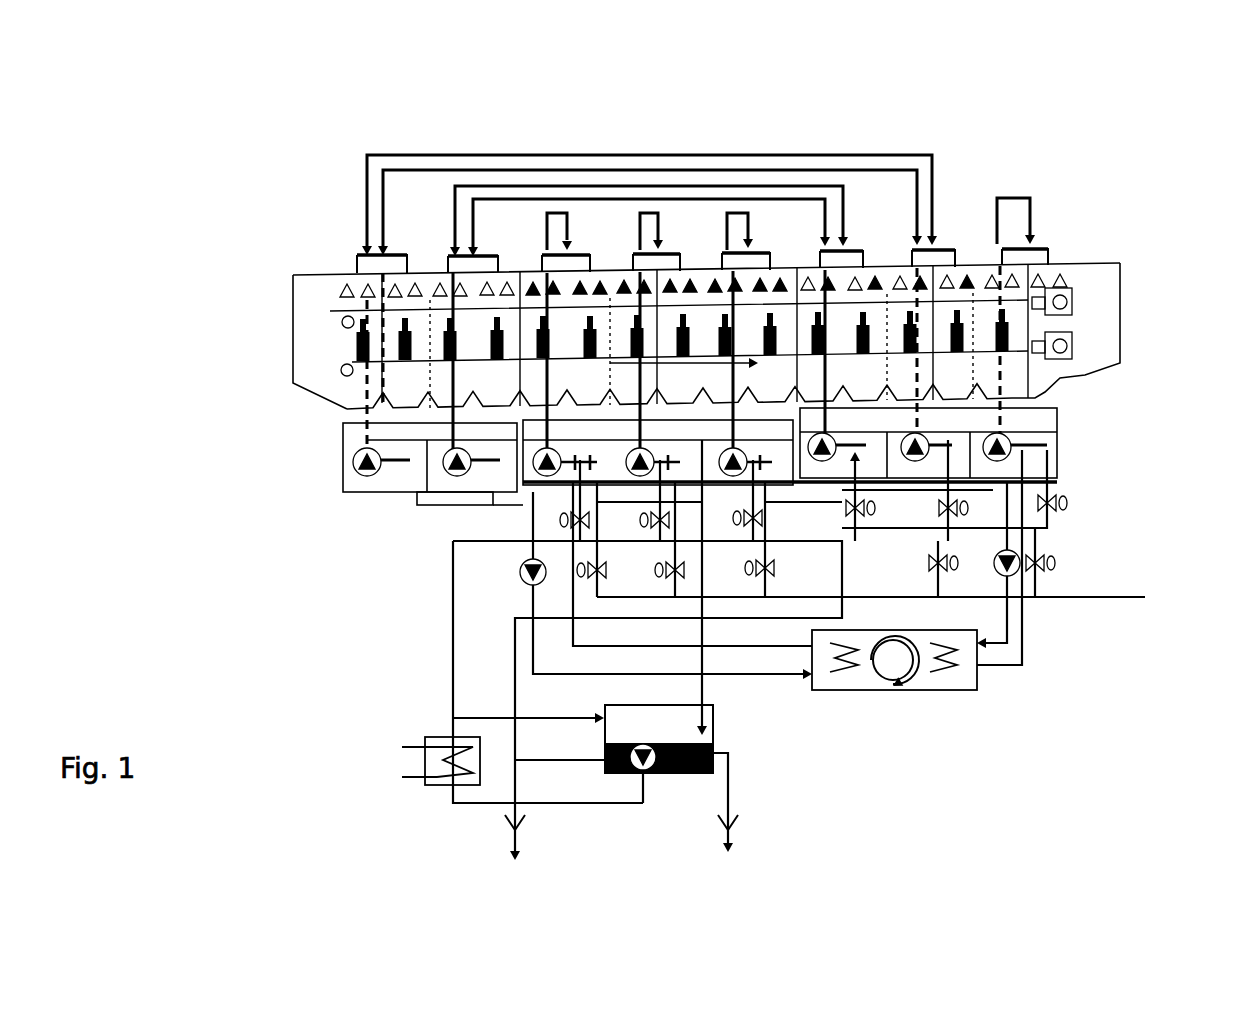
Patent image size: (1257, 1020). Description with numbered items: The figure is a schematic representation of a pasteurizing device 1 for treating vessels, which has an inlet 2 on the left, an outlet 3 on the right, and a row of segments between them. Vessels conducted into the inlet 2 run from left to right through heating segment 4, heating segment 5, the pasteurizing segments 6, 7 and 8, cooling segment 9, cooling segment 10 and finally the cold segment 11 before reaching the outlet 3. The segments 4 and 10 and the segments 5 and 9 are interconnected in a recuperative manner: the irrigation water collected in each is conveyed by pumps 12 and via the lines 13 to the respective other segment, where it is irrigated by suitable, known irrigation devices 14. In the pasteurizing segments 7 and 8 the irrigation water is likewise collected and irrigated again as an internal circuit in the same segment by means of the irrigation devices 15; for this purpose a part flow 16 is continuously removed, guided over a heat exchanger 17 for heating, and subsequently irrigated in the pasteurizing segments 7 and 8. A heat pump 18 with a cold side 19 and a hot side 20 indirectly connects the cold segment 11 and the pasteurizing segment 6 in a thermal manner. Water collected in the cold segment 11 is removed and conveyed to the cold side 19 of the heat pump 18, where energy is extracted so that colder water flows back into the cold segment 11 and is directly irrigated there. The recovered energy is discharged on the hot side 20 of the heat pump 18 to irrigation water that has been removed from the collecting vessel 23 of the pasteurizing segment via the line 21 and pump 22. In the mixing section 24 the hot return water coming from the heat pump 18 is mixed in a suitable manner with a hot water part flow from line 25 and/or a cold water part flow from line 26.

The pasteurizing device 1 is at (1104, 166).
The inlet 2 is at (303, 328).
The outlet 3 is at (1108, 316).
The heating segment 4 is at (411, 393).
The heating segment 5 is at (480, 392).
The pasteurizing segment 6 is at (574, 390).
The pasteurizing segment 7 is at (679, 391).
The pasteurizing segment 8 is at (775, 389).
The cooling segment 9 is at (861, 386).
The cooling segment 10 is at (962, 380).
The cold segment 11 is at (1021, 379).
The pumps 12 is at (345, 470).
The lines 13 is at (483, 153).
The irrigation devices 14 is at (403, 282).
The irrigation devices 15 is at (573, 327).
The part flow 16 is at (700, 688).
The heat exchanger 17 is at (437, 757).
The heat pump 18 is at (895, 692).
The cold side 19 is at (960, 668).
The hot side 20 is at (830, 688).
The line 21 is at (530, 600).
The pump 22 is at (521, 570).
The collecting vessel 23 is at (568, 430).
The mixing section 24 is at (532, 492).
The line 25 is at (760, 648).
The line 26 is at (1095, 590).